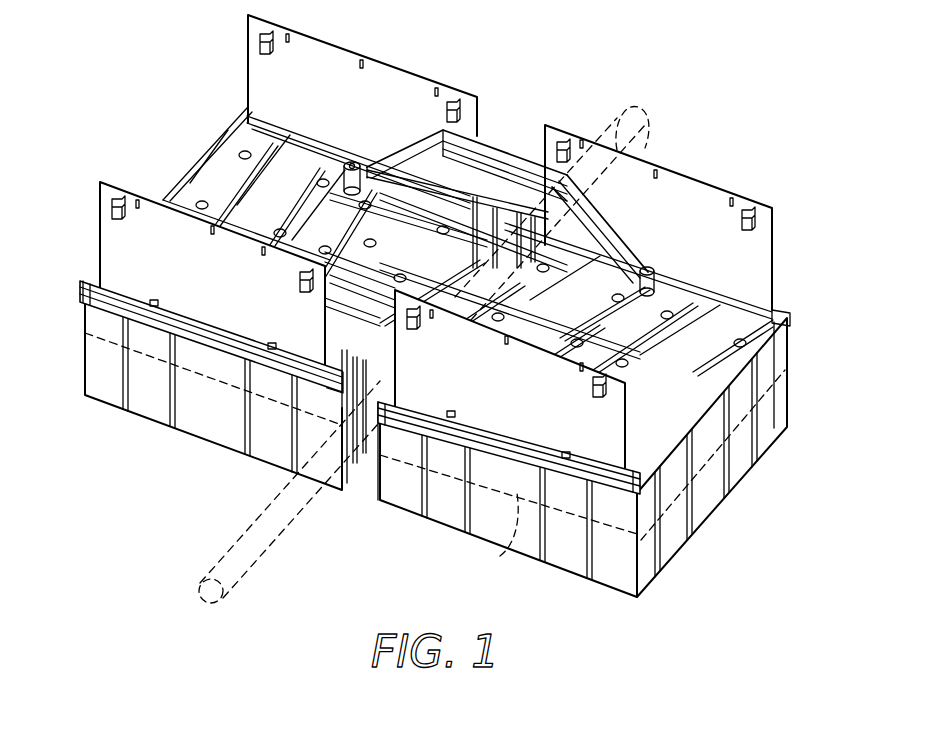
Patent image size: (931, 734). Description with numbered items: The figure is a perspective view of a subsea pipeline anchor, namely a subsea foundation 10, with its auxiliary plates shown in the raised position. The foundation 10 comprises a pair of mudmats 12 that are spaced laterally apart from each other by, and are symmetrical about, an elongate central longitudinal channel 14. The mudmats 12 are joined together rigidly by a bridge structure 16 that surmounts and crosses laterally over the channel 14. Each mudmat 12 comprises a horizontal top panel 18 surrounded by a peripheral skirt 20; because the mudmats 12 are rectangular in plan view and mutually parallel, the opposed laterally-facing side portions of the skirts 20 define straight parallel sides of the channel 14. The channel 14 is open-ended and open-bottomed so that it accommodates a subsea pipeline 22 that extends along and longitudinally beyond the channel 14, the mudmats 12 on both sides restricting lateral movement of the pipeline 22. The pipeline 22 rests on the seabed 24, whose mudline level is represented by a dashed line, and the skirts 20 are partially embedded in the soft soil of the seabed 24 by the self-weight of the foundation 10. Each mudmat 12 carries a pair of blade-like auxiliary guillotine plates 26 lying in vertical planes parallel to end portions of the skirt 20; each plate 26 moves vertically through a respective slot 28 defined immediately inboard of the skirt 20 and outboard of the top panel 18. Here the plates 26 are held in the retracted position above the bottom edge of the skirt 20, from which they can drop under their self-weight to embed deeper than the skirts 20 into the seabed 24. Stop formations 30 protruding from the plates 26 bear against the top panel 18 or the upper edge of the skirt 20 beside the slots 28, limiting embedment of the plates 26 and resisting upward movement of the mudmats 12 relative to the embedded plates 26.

The subsea foundation 10 is at (128, 68).
The mudmat 12 is at (152, 453).
The channel 14 is at (361, 503).
The bridge structure 16 is at (498, 152).
The top panel 18 is at (708, 335).
The skirt 20 is at (96, 362).
The subsea pipeline 22 is at (275, 547).
The seabed 24 is at (500, 556).
The auxiliary guillotine plate 26 is at (100, 242).
The slot 28 is at (207, 325).
The stop formation 30 is at (255, 35).